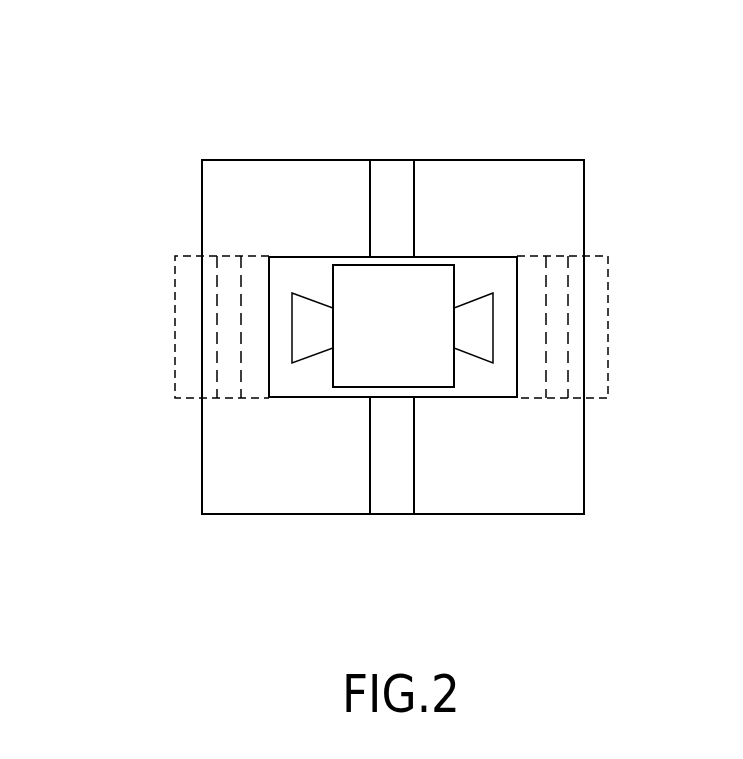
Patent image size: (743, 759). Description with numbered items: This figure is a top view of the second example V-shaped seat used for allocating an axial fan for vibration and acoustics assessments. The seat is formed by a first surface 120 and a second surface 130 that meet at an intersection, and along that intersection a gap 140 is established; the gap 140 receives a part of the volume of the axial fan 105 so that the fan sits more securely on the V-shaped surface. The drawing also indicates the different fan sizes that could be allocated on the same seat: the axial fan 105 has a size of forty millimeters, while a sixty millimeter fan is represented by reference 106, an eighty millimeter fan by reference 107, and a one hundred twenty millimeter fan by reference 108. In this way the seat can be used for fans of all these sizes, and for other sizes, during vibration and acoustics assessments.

The axial fan 105 is at (270, 257).
The fan of 60 mm size 106 is at (242, 300).
The fan of 80 mm size 107 is at (217, 352).
The fan of 120 mm size 108 is at (176, 398).
The first surface 120 is at (202, 210).
The second surface 130 is at (585, 220).
The gap 140 is at (395, 160).